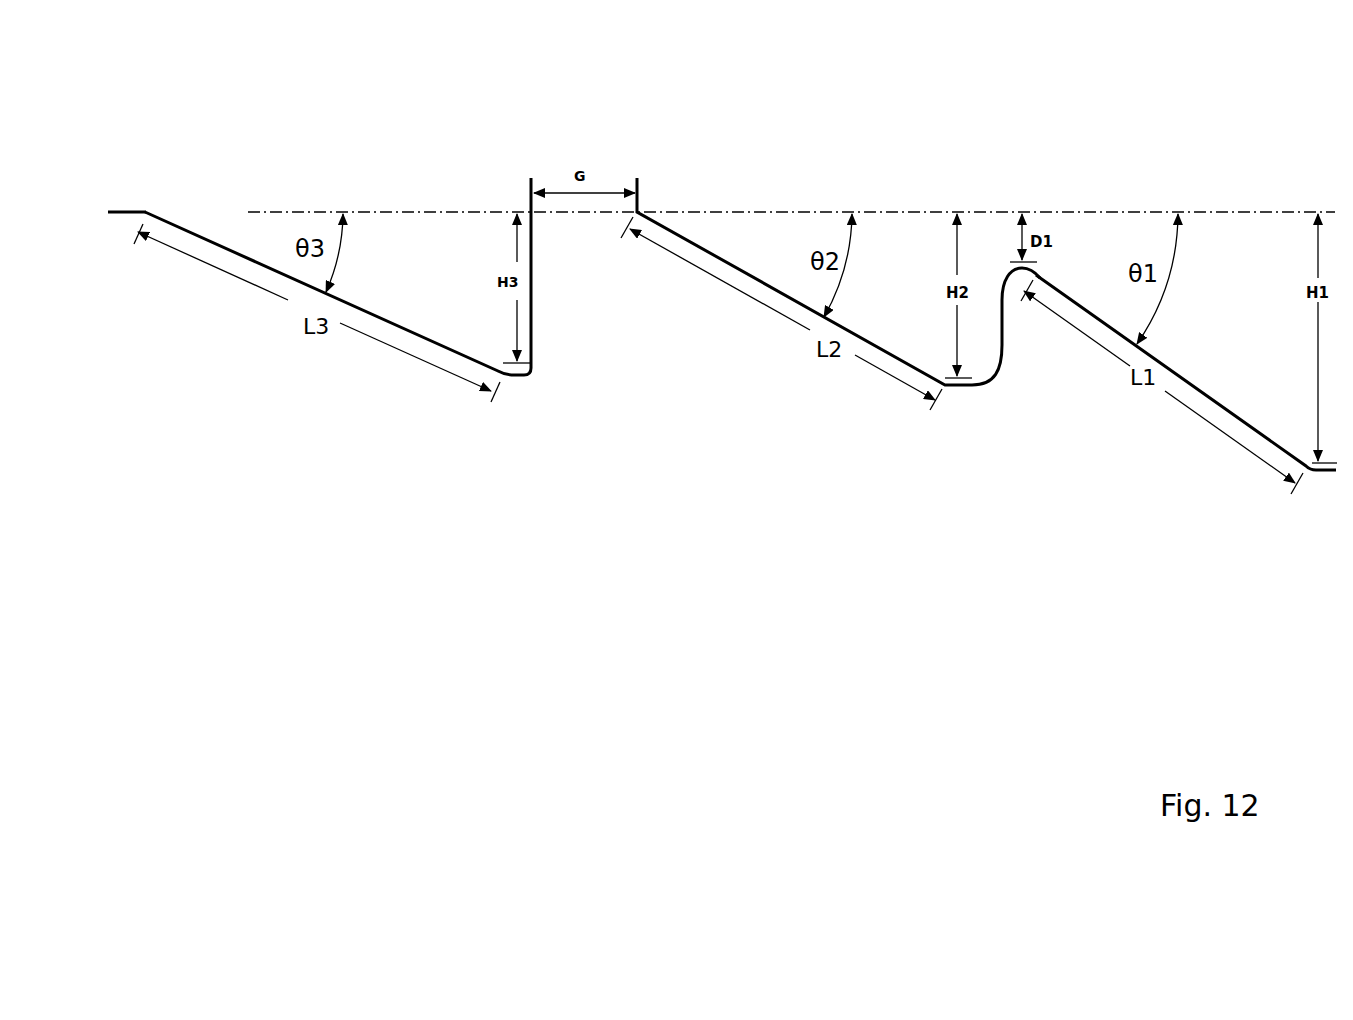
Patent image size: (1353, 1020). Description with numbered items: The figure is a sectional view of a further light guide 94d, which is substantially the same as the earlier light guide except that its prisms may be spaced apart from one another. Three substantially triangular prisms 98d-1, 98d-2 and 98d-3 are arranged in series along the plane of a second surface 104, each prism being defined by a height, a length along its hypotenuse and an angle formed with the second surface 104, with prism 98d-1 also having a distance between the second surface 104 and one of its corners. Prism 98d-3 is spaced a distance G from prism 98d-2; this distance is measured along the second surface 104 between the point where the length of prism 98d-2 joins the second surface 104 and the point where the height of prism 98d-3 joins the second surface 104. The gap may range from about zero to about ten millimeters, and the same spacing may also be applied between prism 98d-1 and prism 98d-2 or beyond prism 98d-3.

The light guide 94d is at (388, 546).
The second surface 104 is at (118, 210).
The prism 98d-3 is at (440, 275).
The prism 98d-2 is at (918, 258).
The prism 98d-1 is at (1255, 258).